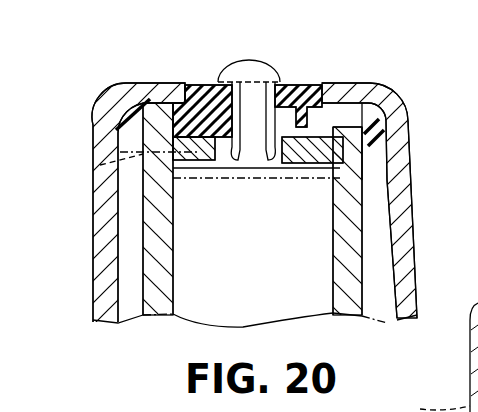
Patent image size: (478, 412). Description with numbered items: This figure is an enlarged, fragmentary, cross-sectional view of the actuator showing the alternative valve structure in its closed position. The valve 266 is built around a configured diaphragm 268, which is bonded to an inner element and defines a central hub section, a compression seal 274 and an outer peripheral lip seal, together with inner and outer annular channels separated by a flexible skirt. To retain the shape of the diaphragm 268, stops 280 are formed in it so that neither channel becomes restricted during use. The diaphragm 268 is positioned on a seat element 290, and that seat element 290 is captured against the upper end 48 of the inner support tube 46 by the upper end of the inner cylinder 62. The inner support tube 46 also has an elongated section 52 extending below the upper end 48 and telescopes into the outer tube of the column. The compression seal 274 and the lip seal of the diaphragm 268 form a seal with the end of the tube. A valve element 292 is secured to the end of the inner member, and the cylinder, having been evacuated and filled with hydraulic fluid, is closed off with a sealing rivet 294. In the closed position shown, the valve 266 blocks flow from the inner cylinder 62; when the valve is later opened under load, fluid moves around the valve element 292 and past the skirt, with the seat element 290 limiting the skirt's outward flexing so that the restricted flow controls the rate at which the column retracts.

The inner support tube 46 is at (76, 300).
The upper end 48 is at (143, 82).
The elongated section 52 is at (373, 98).
The inner cylinder 62 is at (348, 303).
The valve 266 is at (328, 71).
The diaphragm 268 is at (205, 82).
The compression seal 274 is at (358, 82).
The stops 280 is at (200, 140).
The seat element 290 is at (100, 165).
The valve element 292 is at (278, 165).
The sealing rivet 294 is at (256, 65).